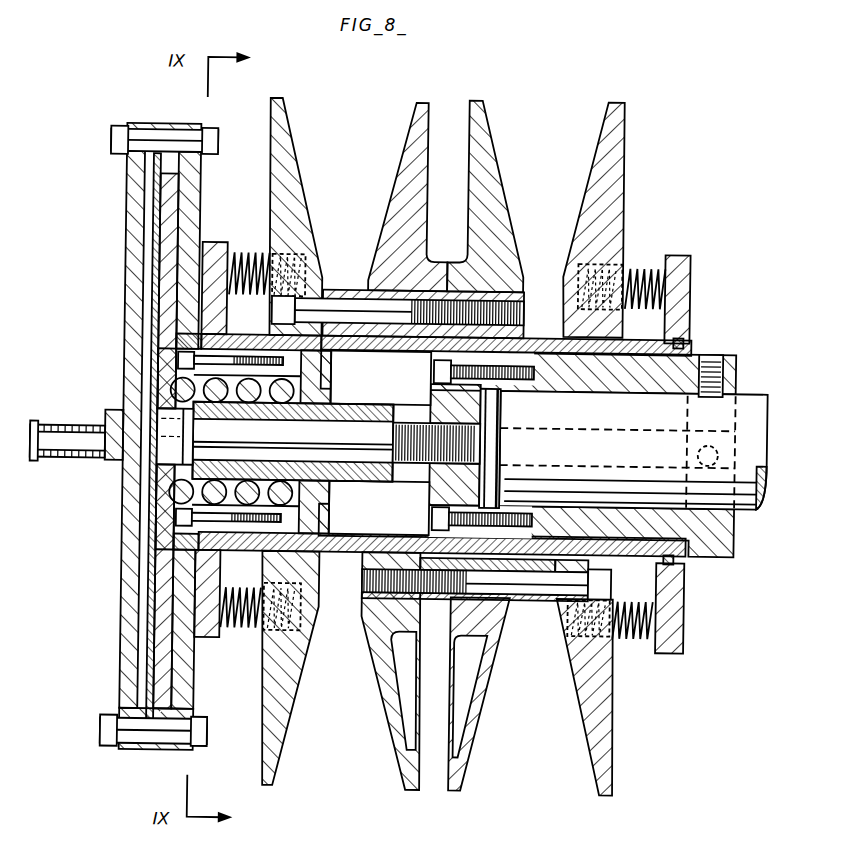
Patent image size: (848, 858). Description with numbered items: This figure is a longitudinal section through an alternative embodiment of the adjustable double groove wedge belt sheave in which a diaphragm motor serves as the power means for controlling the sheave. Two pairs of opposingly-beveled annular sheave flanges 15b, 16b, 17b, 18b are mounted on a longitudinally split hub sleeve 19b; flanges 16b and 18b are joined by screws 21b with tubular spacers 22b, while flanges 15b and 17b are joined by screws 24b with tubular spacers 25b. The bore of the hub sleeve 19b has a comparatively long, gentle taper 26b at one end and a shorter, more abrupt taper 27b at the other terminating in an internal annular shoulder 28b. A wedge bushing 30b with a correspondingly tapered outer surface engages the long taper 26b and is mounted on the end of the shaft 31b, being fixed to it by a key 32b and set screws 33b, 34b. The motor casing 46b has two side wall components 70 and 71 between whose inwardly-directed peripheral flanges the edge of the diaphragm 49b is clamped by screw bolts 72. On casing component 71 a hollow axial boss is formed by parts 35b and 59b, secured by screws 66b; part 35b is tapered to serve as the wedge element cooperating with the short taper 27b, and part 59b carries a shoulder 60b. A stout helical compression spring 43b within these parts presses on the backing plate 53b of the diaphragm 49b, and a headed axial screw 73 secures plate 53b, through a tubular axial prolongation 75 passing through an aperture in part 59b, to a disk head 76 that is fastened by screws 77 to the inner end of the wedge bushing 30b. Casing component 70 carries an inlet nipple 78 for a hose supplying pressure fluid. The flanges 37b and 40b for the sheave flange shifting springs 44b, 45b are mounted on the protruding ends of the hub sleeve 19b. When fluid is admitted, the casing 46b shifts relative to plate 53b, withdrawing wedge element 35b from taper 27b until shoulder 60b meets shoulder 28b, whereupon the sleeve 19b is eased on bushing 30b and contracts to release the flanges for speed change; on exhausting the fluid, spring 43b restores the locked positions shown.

The sheave flange 15b is at (278, 99).
The sheave flange 16b is at (425, 103).
The sheave flange 17b is at (472, 100).
The sheave flange 18b is at (616, 101).
The split hub sleeve 19b is at (553, 339).
The screw 21b is at (523, 600).
The tubular spacer 22b is at (437, 598).
The screw 24b is at (347, 300).
The tubular spacer 25b is at (447, 291).
The long taper 26b is at (553, 356).
The short taper 27b is at (212, 528).
The internal annular shoulder 28b is at (232, 530).
The wedge bushing 30b is at (597, 380).
The shaft 31b is at (749, 392).
The key 32b is at (663, 428).
The set screw 33b is at (708, 441).
The set screw 34b is at (712, 352).
The wedge element 35b is at (182, 345).
The flange 37b is at (212, 245).
The flange 40b is at (690, 264).
The helical compression spring 43b is at (170, 386).
The sheave flange shifting spring 44b is at (247, 256).
The sheave flange shifting spring 45b is at (645, 266).
The diaphragm motor casing 46b is at (142, 416).
The diaphragm 49b is at (149, 265).
The backing plate 53b is at (170, 498).
The boss part 59b is at (318, 392).
The shoulder 60b is at (257, 337).
The screw 66b is at (177, 364).
The casing side wall component 70 is at (123, 189).
The casing side wall component 71 is at (198, 189).
The screw bolt 72 is at (118, 143).
The headed axial screw 73 is at (152, 468).
The tubular axial prolongation 75 is at (254, 465).
The disk head 76 is at (433, 396).
The screw 77 is at (433, 372).
The inlet nipple 78 is at (64, 430).